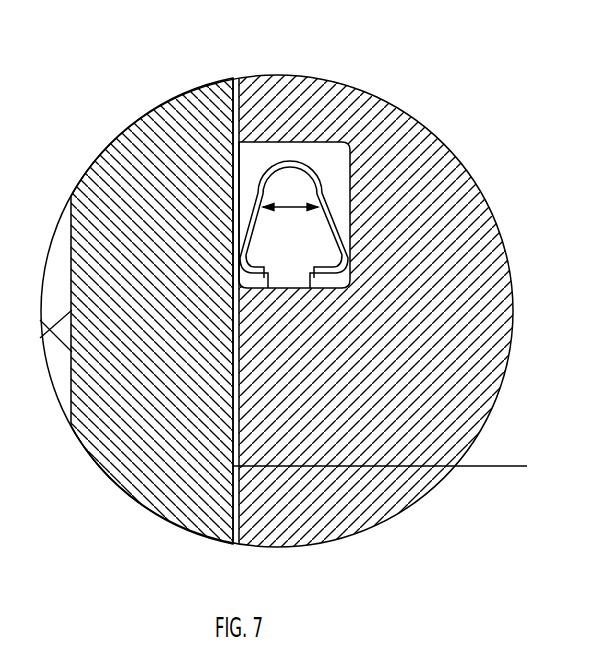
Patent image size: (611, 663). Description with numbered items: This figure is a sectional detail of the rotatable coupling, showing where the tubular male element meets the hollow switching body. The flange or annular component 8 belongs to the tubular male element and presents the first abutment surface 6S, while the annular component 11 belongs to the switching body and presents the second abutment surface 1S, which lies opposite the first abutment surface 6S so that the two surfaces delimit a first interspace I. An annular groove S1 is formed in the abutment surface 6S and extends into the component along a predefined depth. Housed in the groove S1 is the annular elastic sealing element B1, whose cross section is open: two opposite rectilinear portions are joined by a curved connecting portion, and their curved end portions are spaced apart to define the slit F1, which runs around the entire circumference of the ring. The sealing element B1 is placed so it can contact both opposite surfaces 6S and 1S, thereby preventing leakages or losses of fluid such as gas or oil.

The first abutment surface 6S is at (235, 98).
The sealing element B1 is at (252, 210).
The groove S1 is at (330, 163).
The flange or annular component 8 is at (483, 263).
The opening or slit F1 is at (288, 278).
The first interspace I is at (386, 466).
The annular component 11 is at (127, 433).
The second abutment surface 1S is at (237, 493).